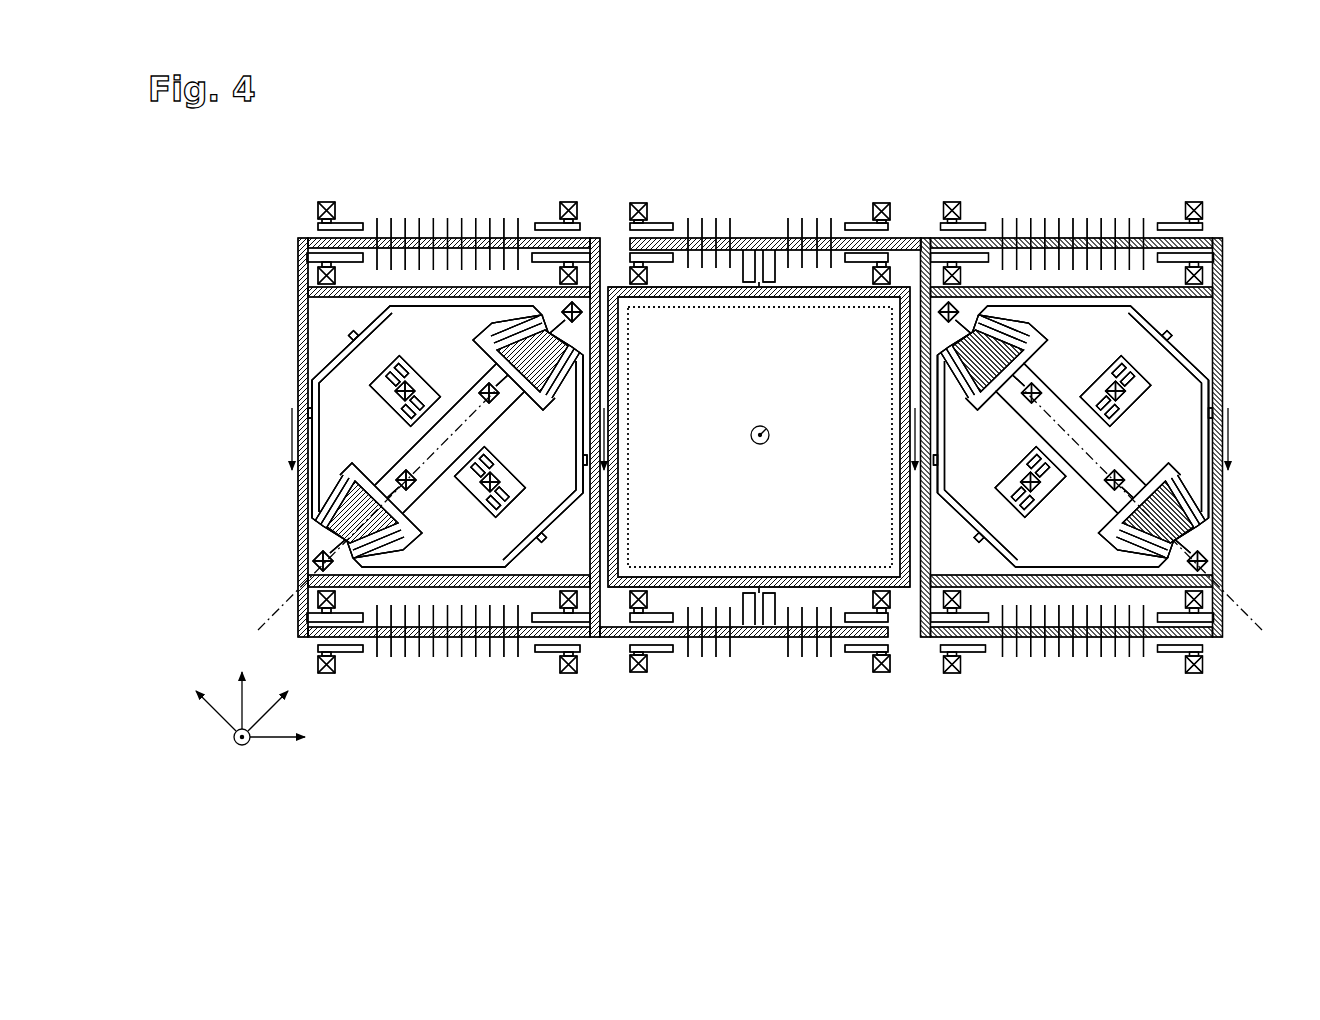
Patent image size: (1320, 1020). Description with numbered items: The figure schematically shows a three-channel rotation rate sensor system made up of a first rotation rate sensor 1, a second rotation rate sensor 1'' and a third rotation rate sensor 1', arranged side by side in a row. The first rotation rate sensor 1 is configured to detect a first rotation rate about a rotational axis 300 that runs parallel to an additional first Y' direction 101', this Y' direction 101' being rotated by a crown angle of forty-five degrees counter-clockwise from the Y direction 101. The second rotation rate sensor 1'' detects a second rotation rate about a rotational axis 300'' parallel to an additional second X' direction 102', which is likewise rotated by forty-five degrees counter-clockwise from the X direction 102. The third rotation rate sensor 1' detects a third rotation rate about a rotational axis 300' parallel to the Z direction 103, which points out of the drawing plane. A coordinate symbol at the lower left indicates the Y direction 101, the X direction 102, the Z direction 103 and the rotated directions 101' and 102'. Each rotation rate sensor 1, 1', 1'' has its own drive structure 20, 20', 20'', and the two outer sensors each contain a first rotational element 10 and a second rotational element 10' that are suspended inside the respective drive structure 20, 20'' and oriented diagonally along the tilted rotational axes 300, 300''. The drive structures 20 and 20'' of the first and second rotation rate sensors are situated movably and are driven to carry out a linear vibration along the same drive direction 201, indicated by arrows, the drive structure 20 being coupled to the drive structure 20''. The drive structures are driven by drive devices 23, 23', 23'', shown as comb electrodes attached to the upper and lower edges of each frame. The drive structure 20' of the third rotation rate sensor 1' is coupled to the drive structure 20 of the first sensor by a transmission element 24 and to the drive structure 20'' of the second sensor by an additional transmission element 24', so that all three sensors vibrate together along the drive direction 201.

The first rotation rate sensor 1 is at (1072, 379).
The third rotation rate sensor 1' is at (760, 379).
The second rotation rate sensor 1'' is at (449, 379).
The first rotational element 10 is at (725, 506).
The second rotational element 10' is at (801, 506).
The drive structure 20 is at (1103, 437).
The drive structure 20' is at (764, 474).
The drive structure 20'' is at (414, 437).
The drive device 23 is at (1072, 439).
The drive device 23' is at (762, 439).
The drive device 23'' is at (448, 439).
The transmission element 24 is at (763, 228).
The additional transmission element 24' is at (766, 649).
The Y direction 101 is at (208, 690).
The additional first Y' direction 101' is at (190, 718).
The X direction 102 is at (277, 768).
The additional second X' direction 102' is at (303, 713).
The Z direction 103 is at (236, 748).
The drive direction 201 is at (291, 438).
The rotational axis 300 is at (1165, 509).
The rotational axis 300' is at (727, 462).
The rotational axis 300'' is at (359, 509).